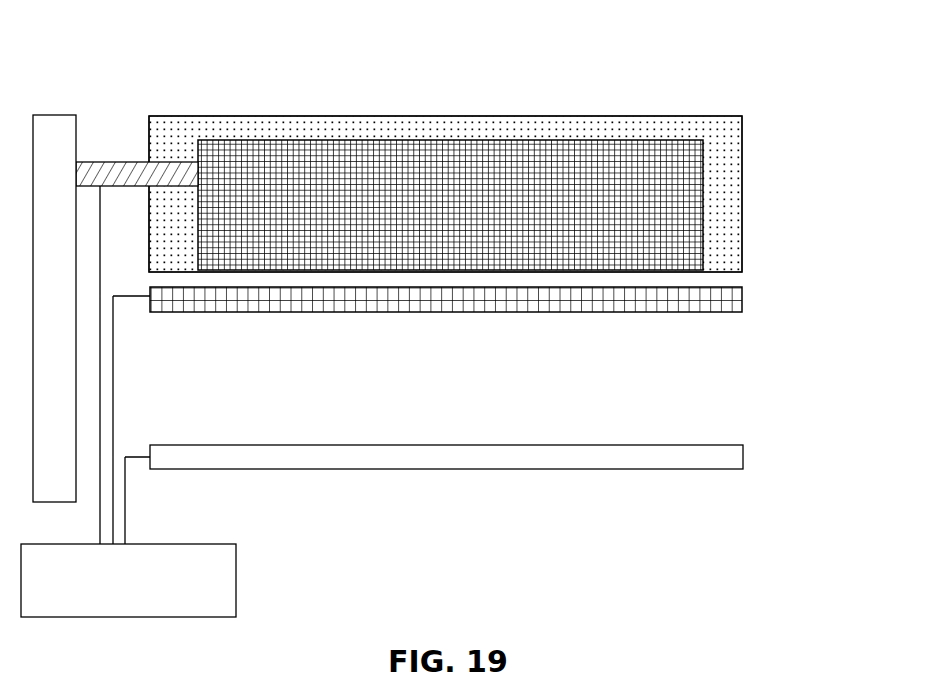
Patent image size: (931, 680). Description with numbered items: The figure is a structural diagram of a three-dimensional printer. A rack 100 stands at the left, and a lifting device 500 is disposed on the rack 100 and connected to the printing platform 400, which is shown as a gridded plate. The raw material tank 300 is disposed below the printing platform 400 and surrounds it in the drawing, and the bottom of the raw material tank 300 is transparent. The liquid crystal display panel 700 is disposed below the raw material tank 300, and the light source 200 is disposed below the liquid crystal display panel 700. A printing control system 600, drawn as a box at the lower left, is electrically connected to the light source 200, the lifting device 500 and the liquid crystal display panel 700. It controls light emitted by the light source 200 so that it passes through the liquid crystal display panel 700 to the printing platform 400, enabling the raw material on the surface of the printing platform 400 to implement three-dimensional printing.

The rack 100 is at (50, 114).
The light source 200 is at (743, 457).
The raw material tank 300 is at (742, 212).
The printing platform 400 is at (703, 172).
The lifting device 500 is at (108, 162).
The printing control system 600 is at (236, 584).
The liquid crystal display panel 700 is at (742, 300).